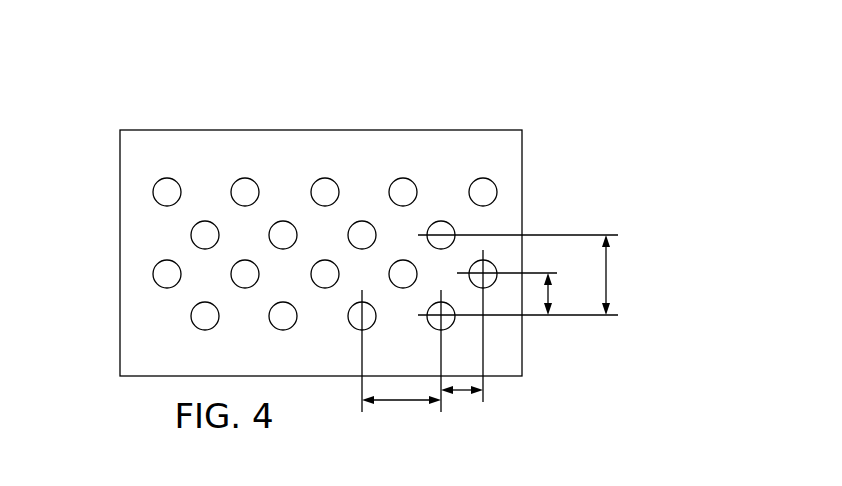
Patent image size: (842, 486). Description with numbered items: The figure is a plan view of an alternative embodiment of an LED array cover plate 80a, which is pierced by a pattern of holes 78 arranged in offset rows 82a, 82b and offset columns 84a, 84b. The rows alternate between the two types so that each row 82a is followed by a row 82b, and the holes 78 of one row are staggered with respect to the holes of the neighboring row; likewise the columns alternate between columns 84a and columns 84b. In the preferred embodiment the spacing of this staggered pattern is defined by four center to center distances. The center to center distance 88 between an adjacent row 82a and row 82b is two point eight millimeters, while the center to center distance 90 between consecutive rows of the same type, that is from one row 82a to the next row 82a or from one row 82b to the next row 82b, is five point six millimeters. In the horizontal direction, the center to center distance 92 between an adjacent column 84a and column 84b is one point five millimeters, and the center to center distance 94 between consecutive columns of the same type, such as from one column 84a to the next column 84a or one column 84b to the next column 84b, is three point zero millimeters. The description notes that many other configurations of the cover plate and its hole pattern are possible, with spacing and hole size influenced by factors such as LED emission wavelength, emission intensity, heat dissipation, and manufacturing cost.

The holes 78 is at (247, 198).
The cover plate 80a is at (386, 130).
The row 82a is at (122, 193).
The row 82b is at (159, 236).
The column 84a is at (167, 153).
The column 84b is at (204, 195).
The center to center distance 88 is at (549, 302).
The center to center distance 90 is at (606, 283).
The center to center distance 92 is at (460, 392).
The center to center distance 94 is at (407, 401).